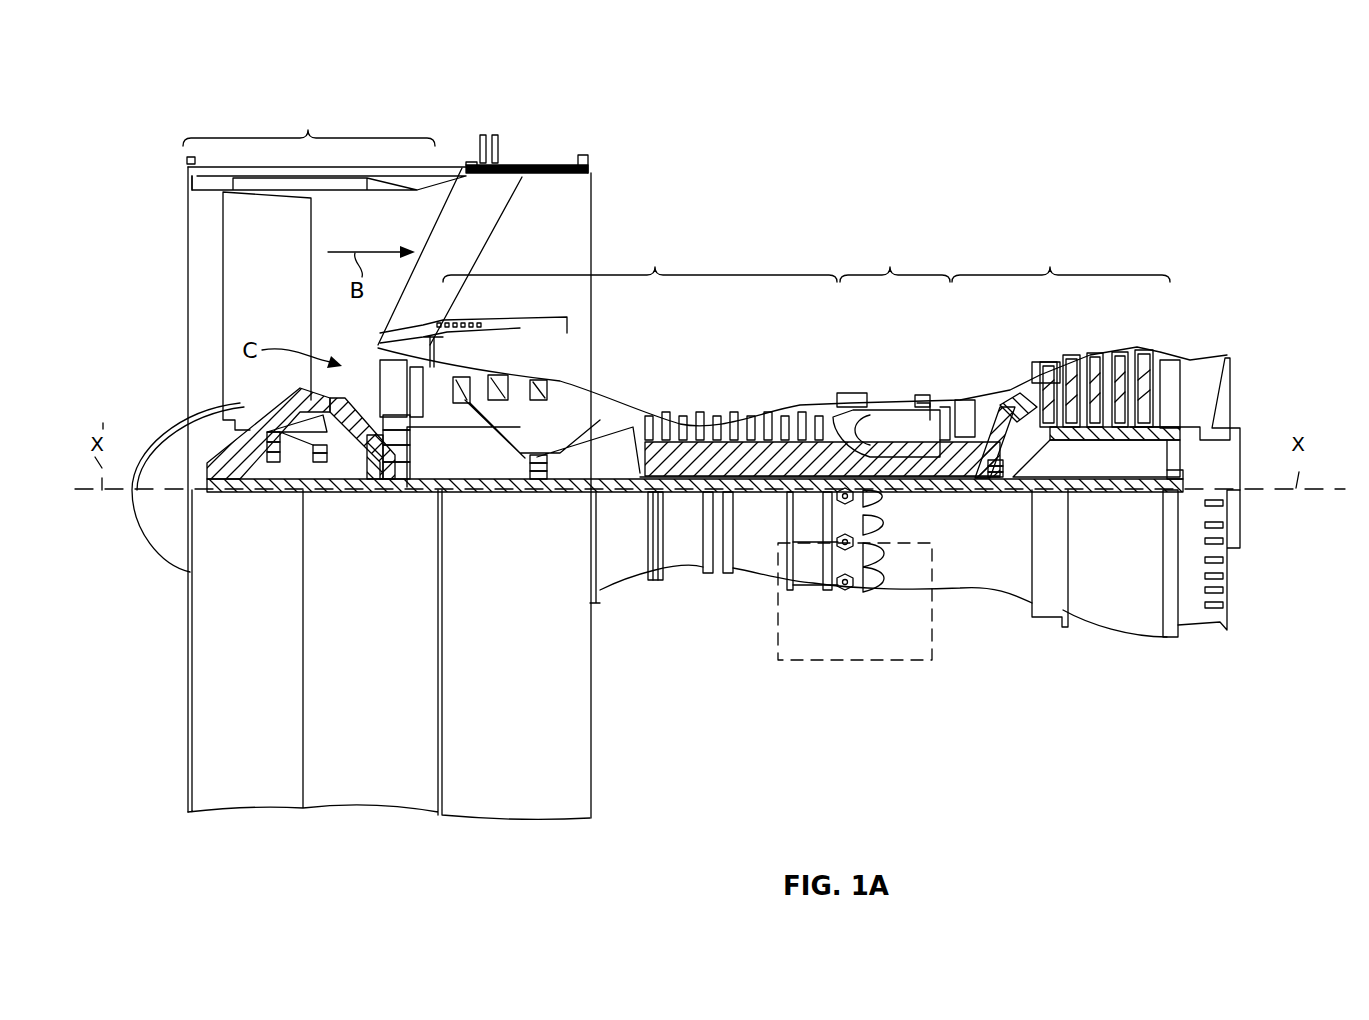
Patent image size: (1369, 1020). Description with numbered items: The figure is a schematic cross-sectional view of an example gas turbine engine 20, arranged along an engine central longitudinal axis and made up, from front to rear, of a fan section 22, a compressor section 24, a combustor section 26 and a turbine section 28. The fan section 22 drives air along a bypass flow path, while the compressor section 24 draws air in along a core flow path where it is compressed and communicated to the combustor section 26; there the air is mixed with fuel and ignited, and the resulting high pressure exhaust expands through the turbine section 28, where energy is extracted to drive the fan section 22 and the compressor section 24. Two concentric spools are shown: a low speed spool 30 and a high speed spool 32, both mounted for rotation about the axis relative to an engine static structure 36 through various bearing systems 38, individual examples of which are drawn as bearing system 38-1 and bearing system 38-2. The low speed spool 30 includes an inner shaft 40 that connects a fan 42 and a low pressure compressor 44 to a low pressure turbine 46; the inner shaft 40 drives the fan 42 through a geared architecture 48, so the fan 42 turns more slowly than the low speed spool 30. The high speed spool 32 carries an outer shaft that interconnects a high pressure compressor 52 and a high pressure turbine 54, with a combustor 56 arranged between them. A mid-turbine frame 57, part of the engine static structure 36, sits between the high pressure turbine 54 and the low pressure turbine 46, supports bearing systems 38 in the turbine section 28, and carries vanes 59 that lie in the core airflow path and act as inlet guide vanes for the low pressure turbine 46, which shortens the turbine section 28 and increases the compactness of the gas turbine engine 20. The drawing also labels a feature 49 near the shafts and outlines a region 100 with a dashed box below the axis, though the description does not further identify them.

The gas turbine engine 20 is at (943, 200).
The fan section 22 is at (361, 461).
The compressor section 24 is at (608, 303).
The combustor section 26 is at (895, 261).
The turbine section 28 is at (1061, 261).
The low speed spool 30 is at (768, 505).
The high speed spool 32 is at (803, 457).
The engine static structure 36 is at (807, 573).
The bearing systems 38 is at (1005, 470).
The bearing system 38-1 is at (268, 472).
The bearing system 38-2 is at (542, 482).
The inner shaft 40 is at (610, 495).
The fan 42 is at (250, 299).
The low pressure compressor 44 is at (520, 383).
The low pressure turbine 46 is at (1103, 365).
The geared architecture 48 is at (402, 512).
The fastener assembly 49 is at (897, 490).
The high pressure compressor 52 is at (746, 456).
The high pressure turbine 54 is at (963, 400).
The combustor 56 is at (887, 427).
The mid-turbine frame 57 is at (1008, 400).
The vanes 59 is at (1008, 418).
The component assembly 100 is at (880, 660).